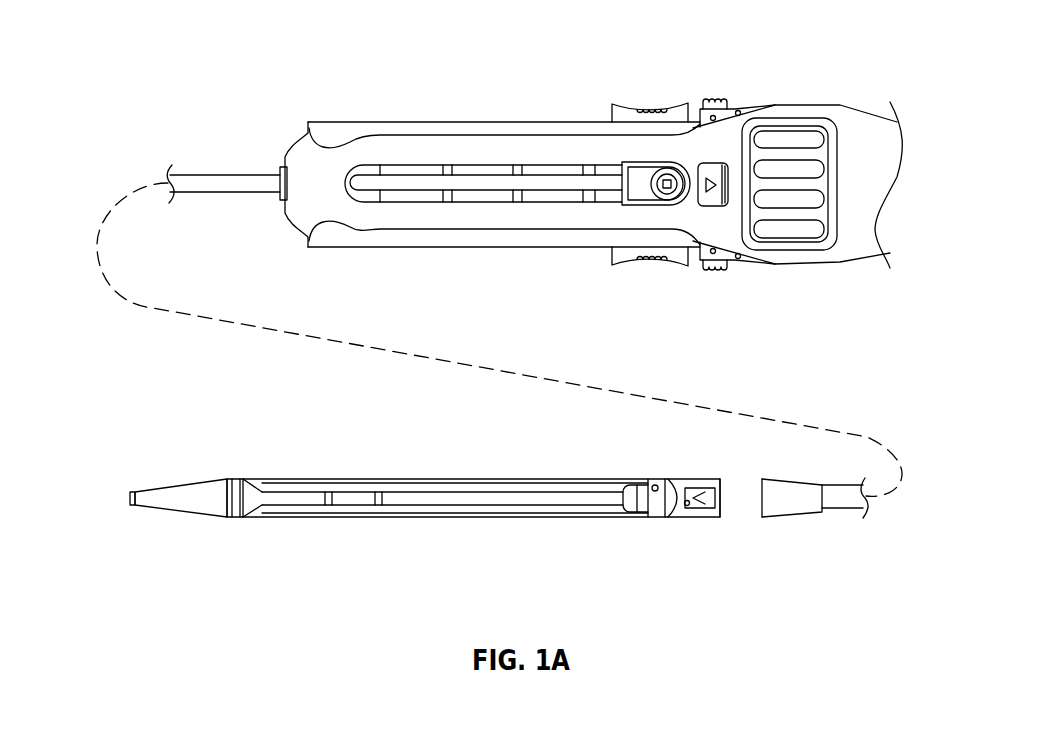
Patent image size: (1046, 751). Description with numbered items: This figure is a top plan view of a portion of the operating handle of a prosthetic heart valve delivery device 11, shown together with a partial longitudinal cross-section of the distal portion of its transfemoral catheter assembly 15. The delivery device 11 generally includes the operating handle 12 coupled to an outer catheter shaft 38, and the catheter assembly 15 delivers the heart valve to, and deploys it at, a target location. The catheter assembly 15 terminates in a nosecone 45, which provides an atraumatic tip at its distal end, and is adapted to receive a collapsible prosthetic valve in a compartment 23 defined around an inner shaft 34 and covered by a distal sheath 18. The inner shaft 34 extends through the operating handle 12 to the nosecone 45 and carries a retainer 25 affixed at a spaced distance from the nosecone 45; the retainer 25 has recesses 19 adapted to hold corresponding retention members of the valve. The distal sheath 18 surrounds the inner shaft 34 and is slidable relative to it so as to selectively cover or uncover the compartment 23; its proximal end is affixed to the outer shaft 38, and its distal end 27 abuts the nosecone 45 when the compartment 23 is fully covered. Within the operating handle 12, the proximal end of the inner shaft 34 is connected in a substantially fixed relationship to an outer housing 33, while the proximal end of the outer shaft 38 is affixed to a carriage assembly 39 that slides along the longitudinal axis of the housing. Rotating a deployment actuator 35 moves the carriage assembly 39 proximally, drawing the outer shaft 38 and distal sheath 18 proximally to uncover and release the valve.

The prosthetic heart valve delivery device 11 is at (210, 38).
The operating handle 12 is at (863, 87).
The catheter assembly 15 is at (345, 530).
The distal sheath 18 is at (462, 517).
The recesses 19 is at (656, 486).
The compartment 23 is at (401, 480).
The retainer 25 is at (658, 517).
The distal end of distal sheath 27 is at (227, 478).
The outer housing 33 is at (528, 118).
The inner shaft 34 is at (483, 505).
The deployment actuator 35 is at (788, 238).
The outer catheter shaft 38 is at (222, 175).
The carriage assembly 39 is at (663, 108).
The nosecone 45 is at (130, 498).